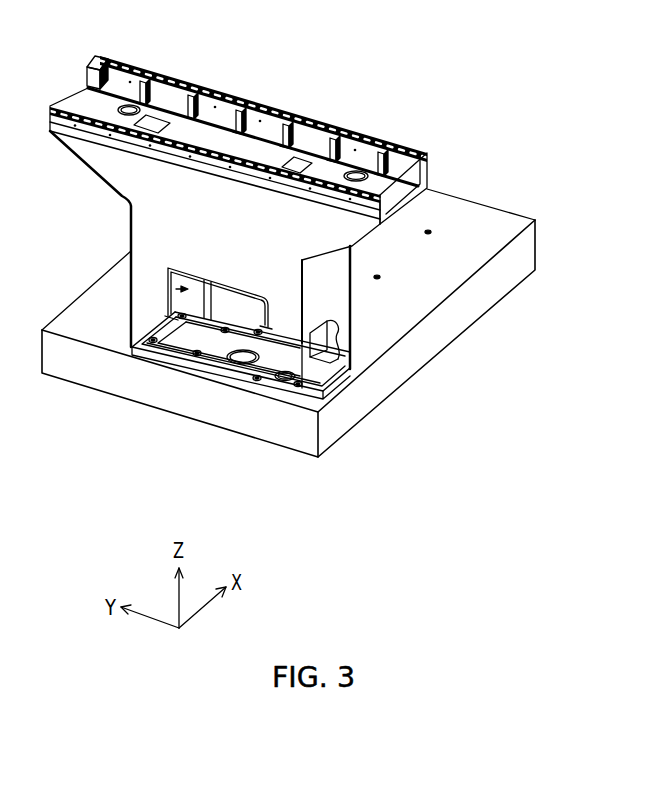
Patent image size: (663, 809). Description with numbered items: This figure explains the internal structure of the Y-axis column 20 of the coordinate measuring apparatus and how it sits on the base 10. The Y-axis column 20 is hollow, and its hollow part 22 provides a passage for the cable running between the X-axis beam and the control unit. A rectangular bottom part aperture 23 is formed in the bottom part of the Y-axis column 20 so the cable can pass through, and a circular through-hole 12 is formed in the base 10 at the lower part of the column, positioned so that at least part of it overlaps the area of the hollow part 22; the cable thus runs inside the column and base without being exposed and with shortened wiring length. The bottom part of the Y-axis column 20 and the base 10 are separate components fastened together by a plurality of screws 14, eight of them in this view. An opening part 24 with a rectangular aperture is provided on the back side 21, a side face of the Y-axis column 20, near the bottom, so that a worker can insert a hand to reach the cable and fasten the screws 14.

The base 10 is at (522, 246).
The through-hole 12 is at (242, 362).
The screws 14 is at (197, 357).
The Y-axis column 20 is at (323, 302).
The back side 21 is at (122, 195).
The hollow part 22 is at (176, 289).
The bottom part aperture 23 is at (183, 343).
The opening part 24 is at (240, 288).